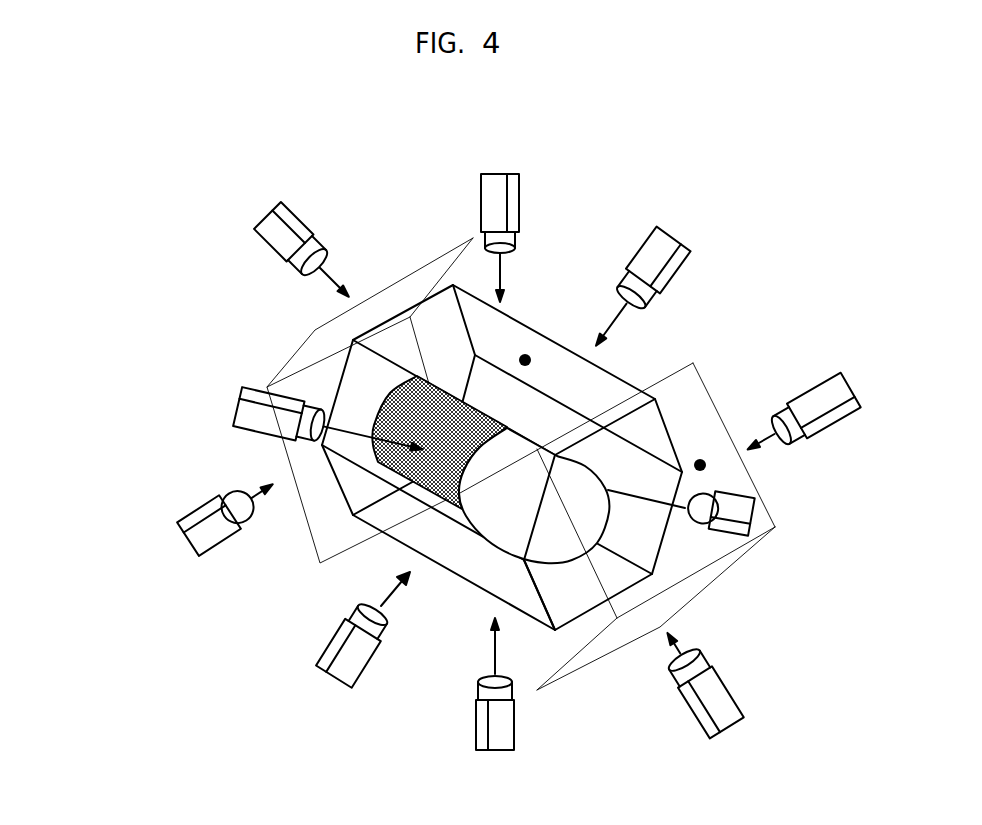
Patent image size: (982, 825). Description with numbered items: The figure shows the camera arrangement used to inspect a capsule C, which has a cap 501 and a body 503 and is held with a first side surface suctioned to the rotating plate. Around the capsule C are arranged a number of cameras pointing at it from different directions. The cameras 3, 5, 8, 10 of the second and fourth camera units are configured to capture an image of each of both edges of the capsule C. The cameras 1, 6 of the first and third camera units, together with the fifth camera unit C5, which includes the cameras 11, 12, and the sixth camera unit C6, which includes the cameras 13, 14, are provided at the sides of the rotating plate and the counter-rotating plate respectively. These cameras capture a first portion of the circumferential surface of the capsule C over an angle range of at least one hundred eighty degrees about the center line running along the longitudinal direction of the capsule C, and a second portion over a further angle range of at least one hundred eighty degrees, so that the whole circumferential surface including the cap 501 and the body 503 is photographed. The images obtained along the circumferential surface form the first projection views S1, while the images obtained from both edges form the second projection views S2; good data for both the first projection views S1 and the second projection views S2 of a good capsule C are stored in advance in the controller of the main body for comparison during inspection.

The camera 1 is at (502, 225).
The camera 3 is at (799, 409).
The camera 5 is at (696, 690).
The camera 6 is at (495, 701).
The camera 8 is at (230, 511).
The camera 10 is at (296, 255).
The camera 11 is at (638, 288).
The camera 12 is at (695, 511).
The camera 13 is at (359, 639).
The camera 14 is at (315, 428).
The capsule C is at (222, 595).
The cap 501 is at (423, 466).
The body 503 is at (510, 517).
The first projection view S1 is at (525, 356).
The second projection view S2 is at (701, 460).
The fifth camera unit C5 is at (783, 518).
The sixth camera unit C6 is at (300, 702).